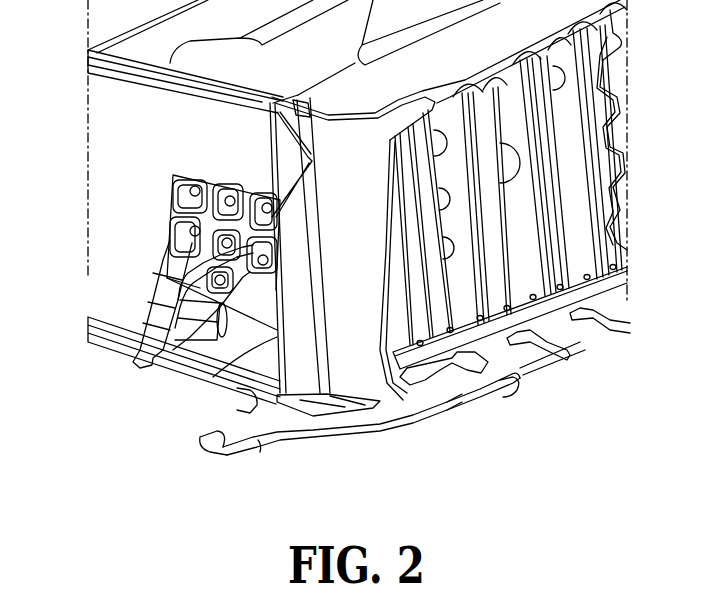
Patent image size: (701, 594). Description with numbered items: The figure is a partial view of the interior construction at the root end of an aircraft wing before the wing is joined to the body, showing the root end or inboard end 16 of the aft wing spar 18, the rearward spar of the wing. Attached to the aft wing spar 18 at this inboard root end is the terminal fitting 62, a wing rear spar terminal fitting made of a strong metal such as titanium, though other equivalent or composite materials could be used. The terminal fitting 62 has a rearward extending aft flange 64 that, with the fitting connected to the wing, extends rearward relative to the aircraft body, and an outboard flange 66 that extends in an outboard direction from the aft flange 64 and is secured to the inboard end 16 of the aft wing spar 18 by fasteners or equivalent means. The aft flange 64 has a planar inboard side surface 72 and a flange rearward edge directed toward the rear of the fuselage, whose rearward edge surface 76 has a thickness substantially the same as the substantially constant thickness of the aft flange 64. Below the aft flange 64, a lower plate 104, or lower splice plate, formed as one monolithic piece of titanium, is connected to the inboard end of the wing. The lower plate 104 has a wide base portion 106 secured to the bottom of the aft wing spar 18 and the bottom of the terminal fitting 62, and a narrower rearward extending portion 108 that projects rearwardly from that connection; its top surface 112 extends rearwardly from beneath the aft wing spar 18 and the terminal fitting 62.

The root end or inboard end 16 is at (343, 400).
The aft wing spar 18 is at (157, 273).
The terminal fitting 62 is at (383, 325).
The aft flange 64 is at (273, 335).
The outboard flange 66 is at (278, 128).
The inboard side surface 72 is at (297, 377).
The rearward edge surface 76 is at (273, 255).
The lower plate 104 is at (417, 432).
The base portion 106 is at (463, 388).
The rearward extending portion 108 is at (260, 445).
The top surface 112 is at (202, 438).